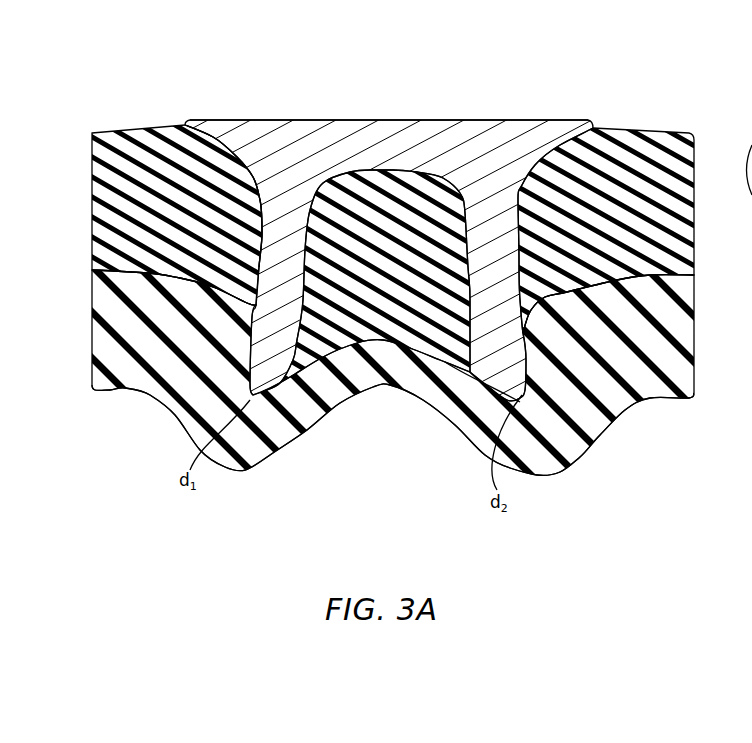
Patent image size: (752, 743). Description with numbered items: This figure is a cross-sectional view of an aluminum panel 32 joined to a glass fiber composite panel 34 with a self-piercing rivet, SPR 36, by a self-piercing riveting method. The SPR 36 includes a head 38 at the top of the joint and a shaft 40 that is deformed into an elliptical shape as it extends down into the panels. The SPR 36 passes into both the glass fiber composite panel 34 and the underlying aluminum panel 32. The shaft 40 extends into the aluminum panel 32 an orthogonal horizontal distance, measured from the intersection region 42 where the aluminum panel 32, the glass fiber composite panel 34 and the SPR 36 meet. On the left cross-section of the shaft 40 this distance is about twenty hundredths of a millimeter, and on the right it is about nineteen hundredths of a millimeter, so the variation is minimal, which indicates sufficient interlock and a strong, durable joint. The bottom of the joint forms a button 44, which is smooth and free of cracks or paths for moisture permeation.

The aluminum panel 32 is at (105, 348).
The glass fiber composite panel 34 is at (93, 216).
The SPR 36 is at (349, 116).
The head 38 is at (262, 119).
The shaft 40 is at (247, 207).
The intersection region 42 is at (238, 318).
The button 44 is at (419, 444).